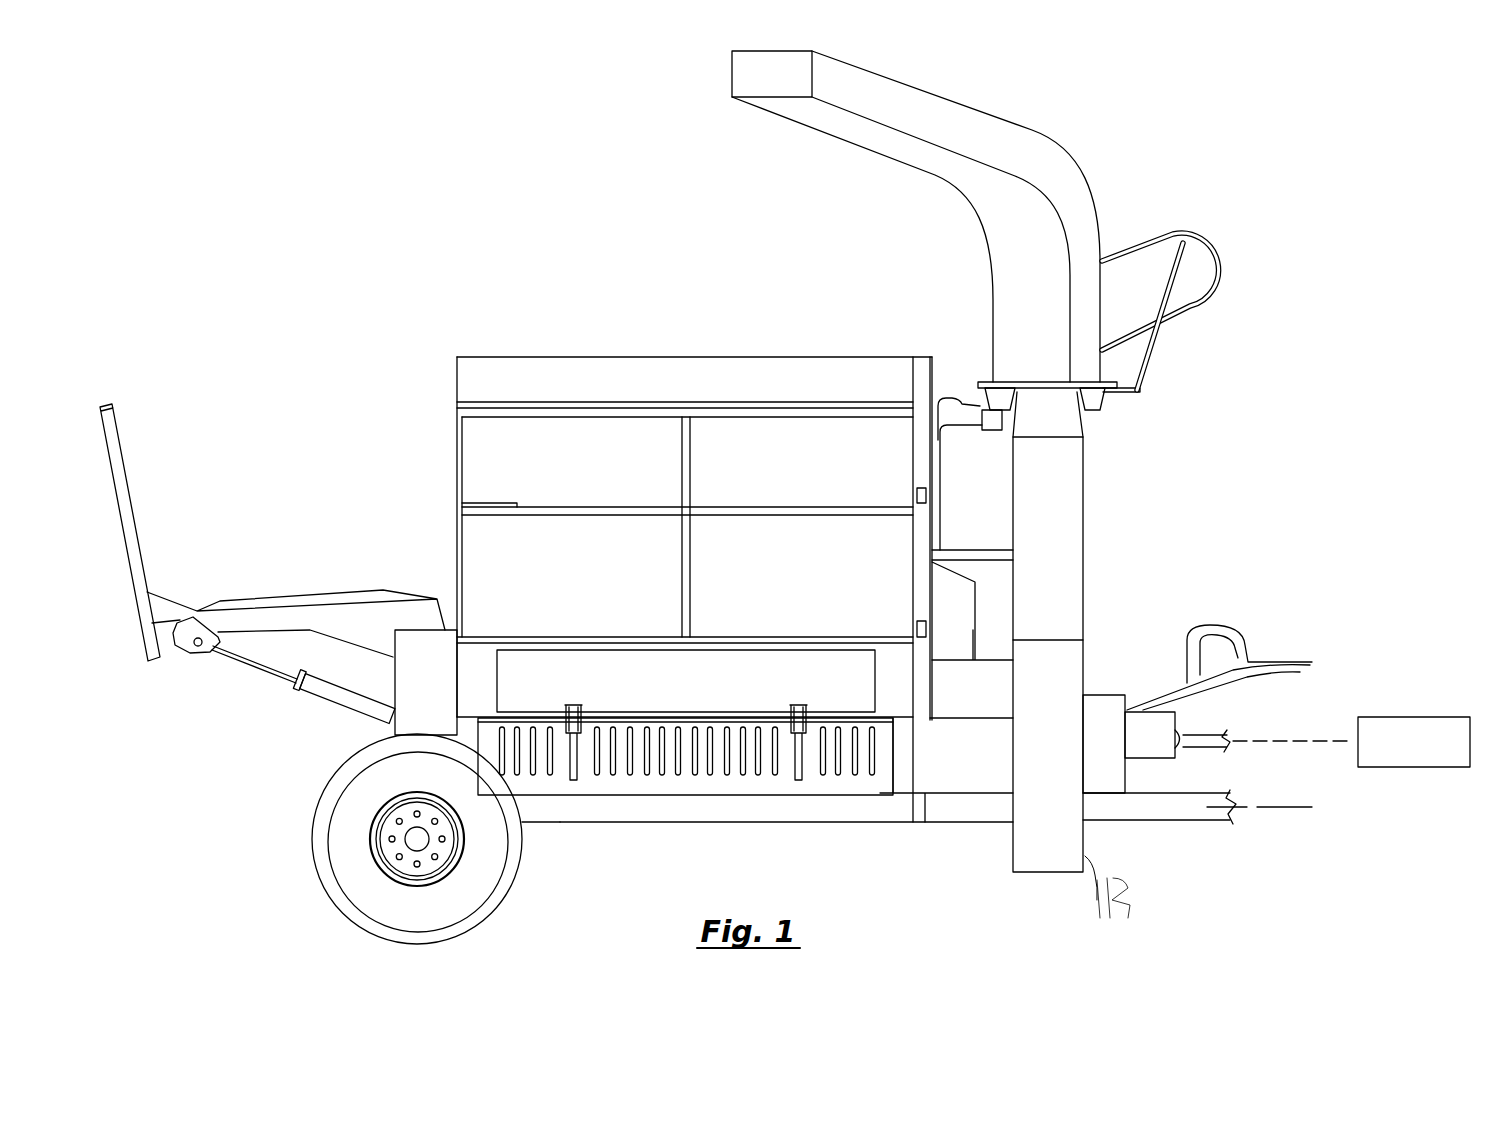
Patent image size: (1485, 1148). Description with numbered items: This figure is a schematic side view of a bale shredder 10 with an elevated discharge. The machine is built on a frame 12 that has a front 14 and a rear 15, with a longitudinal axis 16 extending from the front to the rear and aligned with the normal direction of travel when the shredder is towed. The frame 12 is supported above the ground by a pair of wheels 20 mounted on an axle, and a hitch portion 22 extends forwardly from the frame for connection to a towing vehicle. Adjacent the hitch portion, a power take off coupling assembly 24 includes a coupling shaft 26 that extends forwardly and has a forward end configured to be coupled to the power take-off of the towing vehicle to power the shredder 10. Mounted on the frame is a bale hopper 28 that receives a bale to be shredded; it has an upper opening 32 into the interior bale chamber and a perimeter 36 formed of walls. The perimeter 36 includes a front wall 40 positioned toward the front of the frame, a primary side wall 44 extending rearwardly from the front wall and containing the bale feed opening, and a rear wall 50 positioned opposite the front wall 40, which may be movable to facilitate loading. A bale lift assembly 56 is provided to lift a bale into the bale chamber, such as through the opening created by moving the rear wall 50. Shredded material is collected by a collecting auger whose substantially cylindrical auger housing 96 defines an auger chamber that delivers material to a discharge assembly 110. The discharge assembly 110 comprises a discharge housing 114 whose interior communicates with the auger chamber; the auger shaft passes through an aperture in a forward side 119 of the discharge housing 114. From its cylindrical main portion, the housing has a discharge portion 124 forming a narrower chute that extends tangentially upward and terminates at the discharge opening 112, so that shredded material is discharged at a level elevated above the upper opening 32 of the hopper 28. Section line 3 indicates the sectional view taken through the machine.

The bale shredder 10 is at (1100, 150).
The frame 12 is at (653, 822).
The front 14 is at (1227, 833).
The rear 15 is at (540, 830).
The longitudinal axis 16 is at (1263, 807).
The wheels 20 is at (347, 862).
The hitch portion 22 is at (1153, 818).
The power take off coupling assembly 24 is at (1193, 725).
The coupling shaft 26 is at (1198, 752).
The bale hopper 28 is at (650, 343).
The upper opening 32 is at (745, 355).
The perimeter 36 is at (440, 432).
The front wall 40 is at (932, 455).
The primary side wall 44 is at (500, 553).
The rear wall 50 is at (277, 625).
The bale lift assembly 56 is at (143, 533).
The auger housing 96 is at (848, 783).
The discharge assembly 110 is at (1107, 672).
The discharge opening 112 is at (835, 120).
The discharge housing 114 is at (1043, 848).
The forward side 119 is at (1107, 887).
The discharge portion 124 is at (1085, 548).
The section line 3- 3 is at (183, 808).